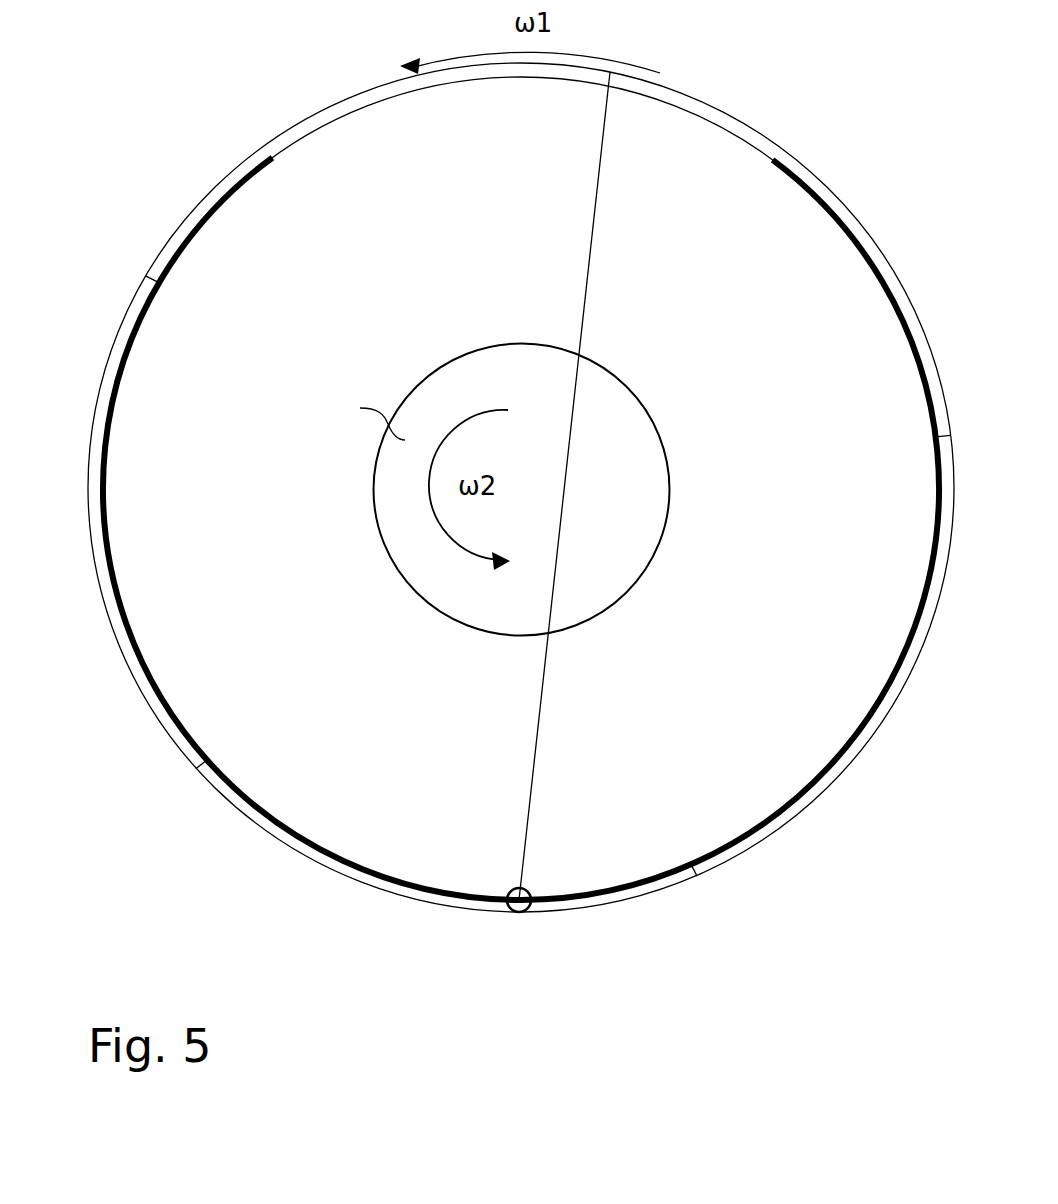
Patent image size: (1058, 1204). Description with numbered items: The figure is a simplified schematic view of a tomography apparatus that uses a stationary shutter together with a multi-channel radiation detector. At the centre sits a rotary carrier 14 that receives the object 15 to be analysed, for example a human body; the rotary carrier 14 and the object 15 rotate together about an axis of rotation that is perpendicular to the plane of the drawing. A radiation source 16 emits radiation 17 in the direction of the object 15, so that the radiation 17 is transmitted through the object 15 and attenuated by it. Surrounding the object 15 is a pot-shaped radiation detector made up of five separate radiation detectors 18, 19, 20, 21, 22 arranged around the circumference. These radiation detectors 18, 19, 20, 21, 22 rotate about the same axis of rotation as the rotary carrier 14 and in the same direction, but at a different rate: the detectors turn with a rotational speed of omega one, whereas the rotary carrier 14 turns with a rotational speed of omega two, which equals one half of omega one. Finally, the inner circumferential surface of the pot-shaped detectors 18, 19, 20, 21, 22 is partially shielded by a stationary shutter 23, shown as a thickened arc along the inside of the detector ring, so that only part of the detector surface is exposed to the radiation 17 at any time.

The rotary carrier 14 is at (400, 573).
The object 15 is at (365, 416).
The radiation source 16 is at (533, 907).
The radiation 17 is at (542, 710).
The radiation detector 18 is at (722, 117).
The radiation detector 19 is at (787, 818).
The radiation detector 20 is at (358, 877).
The radiation detector 21 is at (123, 332).
The radiation detector 22 is at (373, 90).
The stationary shutter 23 is at (228, 197).